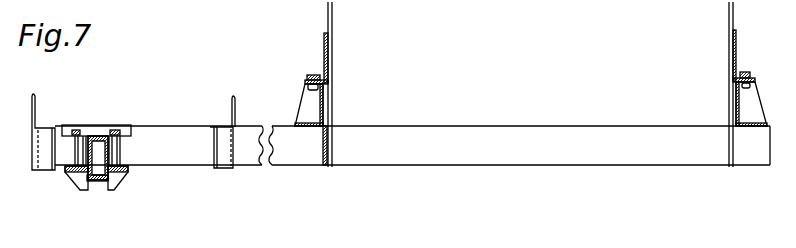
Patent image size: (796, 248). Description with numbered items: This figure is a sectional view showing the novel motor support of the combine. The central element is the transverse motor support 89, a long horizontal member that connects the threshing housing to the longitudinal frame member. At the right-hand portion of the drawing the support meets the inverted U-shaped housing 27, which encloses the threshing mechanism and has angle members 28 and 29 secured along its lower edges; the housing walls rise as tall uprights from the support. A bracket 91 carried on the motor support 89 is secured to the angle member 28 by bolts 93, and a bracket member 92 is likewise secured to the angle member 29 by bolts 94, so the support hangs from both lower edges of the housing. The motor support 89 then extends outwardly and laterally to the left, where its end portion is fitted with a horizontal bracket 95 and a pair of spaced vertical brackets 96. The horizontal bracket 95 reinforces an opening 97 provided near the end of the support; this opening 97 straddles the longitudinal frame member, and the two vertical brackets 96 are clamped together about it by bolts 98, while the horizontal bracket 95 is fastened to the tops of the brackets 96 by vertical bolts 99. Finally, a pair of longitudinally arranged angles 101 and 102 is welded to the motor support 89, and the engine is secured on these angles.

The transverse motor support 89 is at (515, 134).
The longitudinally arranged angle 102 is at (37, 110).
The horizontal bracket 95 is at (92, 128).
The vertical bolts 99 is at (112, 153).
The opening 97 is at (97, 140).
The vertical brackets 96 is at (80, 177).
The bolts 98 is at (90, 187).
The longitudinally arranged angle 101 is at (236, 95).
The U-shaped housing 27 is at (327, 32).
The angle member 29 is at (324, 52).
The bolts 94 is at (313, 75).
The bracket member 92 is at (308, 108).
The angle member 28 is at (735, 40).
The bolts 93 is at (740, 72).
The bracket 91 is at (757, 98).